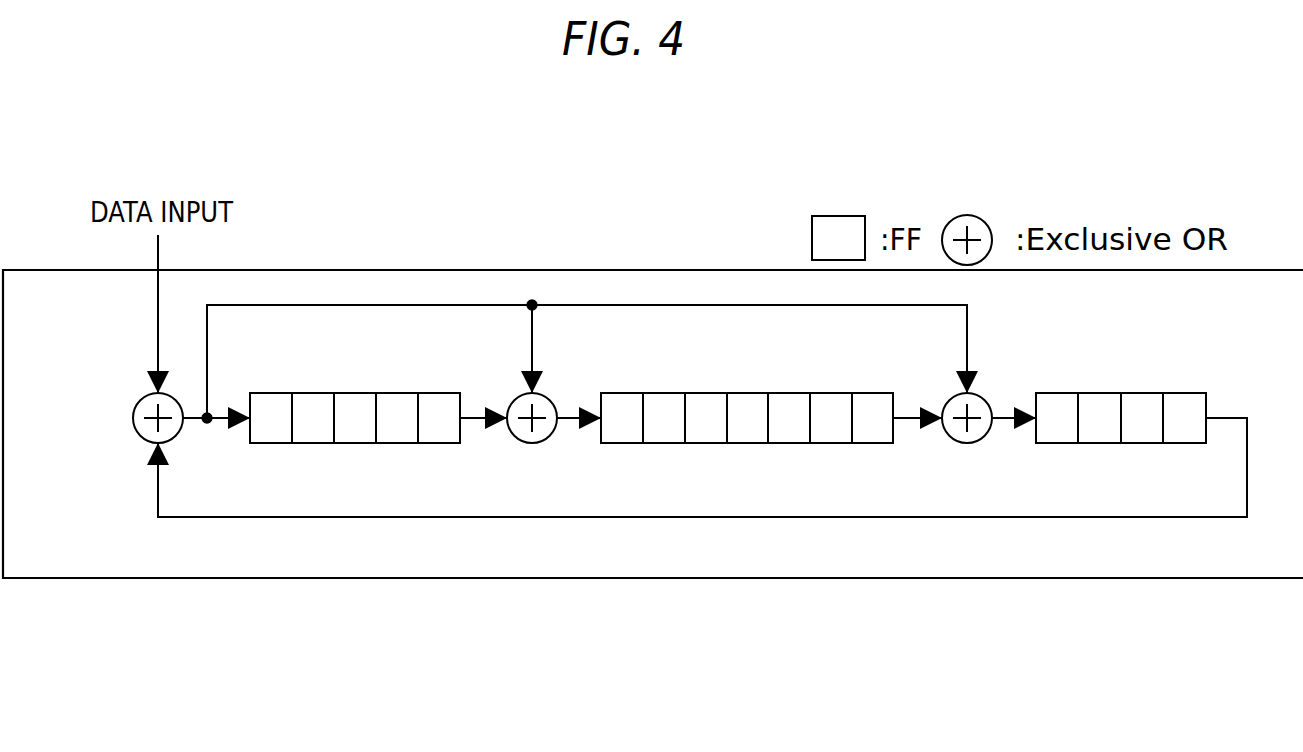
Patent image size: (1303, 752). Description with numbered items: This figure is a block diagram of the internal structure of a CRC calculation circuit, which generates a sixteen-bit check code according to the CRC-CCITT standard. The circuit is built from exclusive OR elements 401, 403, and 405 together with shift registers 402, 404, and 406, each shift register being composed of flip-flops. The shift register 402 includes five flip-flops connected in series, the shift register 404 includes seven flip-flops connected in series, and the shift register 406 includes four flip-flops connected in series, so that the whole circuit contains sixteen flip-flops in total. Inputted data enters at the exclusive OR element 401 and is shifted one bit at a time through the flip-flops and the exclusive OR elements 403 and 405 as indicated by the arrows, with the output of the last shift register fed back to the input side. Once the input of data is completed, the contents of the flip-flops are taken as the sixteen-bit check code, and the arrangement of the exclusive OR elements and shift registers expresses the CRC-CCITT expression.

The exclusive OR element 401 is at (135, 428).
The shift register 402 is at (360, 392).
The exclusive OR element 403 is at (545, 397).
The shift register 404 is at (712, 392).
The exclusive OR element 405 is at (980, 397).
The shift register 406 is at (1127, 392).